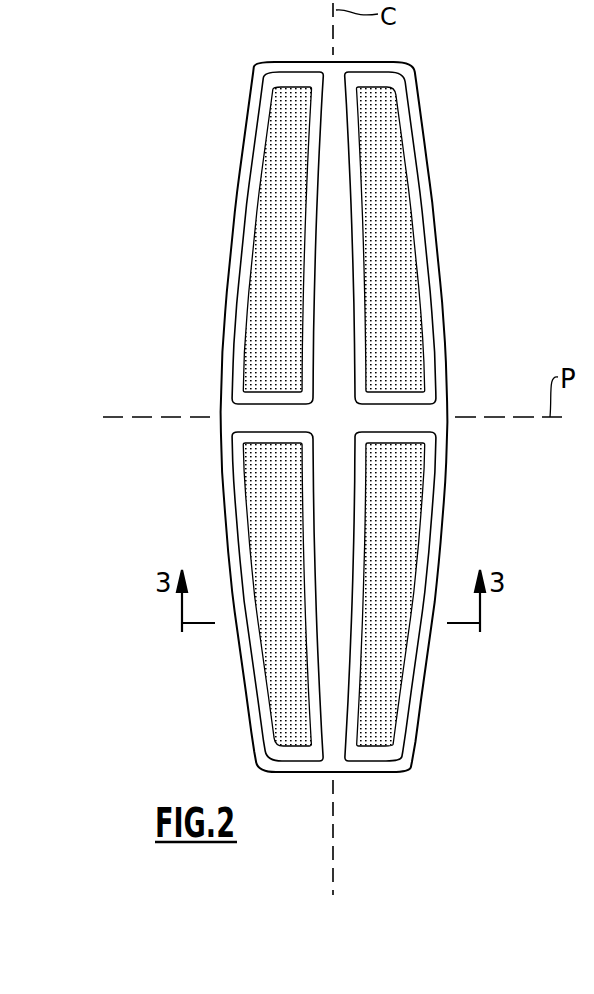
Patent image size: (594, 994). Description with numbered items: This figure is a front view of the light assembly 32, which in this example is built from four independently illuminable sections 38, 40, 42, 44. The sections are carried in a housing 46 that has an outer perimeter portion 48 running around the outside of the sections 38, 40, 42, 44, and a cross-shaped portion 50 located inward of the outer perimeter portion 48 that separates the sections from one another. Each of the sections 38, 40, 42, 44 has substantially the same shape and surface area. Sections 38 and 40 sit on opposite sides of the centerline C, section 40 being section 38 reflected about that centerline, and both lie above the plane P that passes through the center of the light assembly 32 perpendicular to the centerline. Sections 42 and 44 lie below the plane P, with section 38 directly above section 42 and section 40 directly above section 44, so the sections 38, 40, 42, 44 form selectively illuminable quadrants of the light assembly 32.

The light assembly 32 is at (458, 113).
The section 38 is at (278, 204).
The section 40 is at (392, 222).
The section 42 is at (275, 620).
The section 44 is at (400, 546).
The housing 46 is at (452, 281).
The outer perimeter portion 48 is at (440, 377).
The cross-shaped portion 50 is at (262, 417).